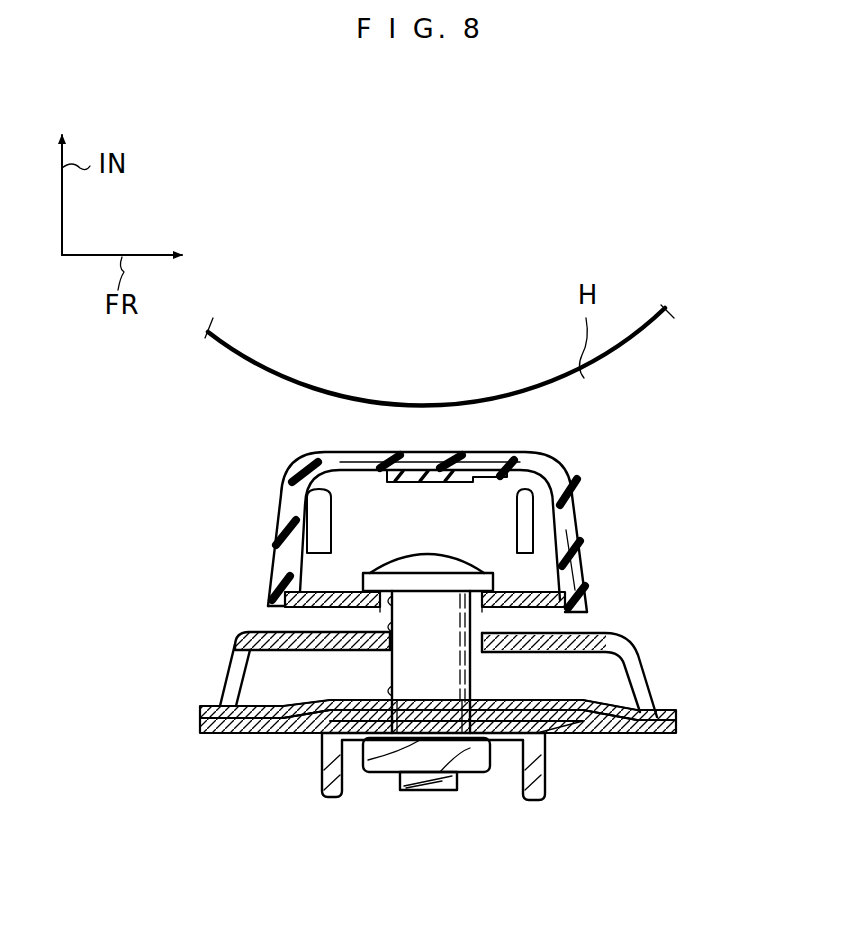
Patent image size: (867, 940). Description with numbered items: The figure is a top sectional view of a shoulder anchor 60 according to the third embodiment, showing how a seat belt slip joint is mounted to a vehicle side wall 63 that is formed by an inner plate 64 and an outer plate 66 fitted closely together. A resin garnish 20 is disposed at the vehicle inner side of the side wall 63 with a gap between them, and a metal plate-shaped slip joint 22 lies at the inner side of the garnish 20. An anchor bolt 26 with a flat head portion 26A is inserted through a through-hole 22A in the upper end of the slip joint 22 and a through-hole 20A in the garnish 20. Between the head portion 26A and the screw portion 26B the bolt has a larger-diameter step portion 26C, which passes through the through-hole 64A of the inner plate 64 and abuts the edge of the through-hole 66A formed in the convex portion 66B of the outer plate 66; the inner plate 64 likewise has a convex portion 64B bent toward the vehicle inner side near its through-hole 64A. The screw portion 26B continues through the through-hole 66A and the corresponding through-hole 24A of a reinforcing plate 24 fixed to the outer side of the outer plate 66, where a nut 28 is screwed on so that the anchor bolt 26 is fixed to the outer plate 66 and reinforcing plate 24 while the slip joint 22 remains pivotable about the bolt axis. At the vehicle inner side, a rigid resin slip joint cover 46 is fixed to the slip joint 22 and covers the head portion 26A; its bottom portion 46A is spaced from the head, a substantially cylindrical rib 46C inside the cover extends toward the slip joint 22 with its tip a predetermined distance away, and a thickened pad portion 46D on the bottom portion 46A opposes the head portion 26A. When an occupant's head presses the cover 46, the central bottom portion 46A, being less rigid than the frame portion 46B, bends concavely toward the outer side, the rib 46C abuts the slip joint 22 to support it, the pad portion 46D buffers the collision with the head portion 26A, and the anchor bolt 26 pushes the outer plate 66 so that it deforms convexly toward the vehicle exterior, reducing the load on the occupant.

The garnish 20 is at (434, 665).
The through-hole 20A is at (388, 613).
The slip joint 22 is at (545, 618).
The through-hole 22A is at (390, 612).
The reinforcing plate 24 is at (530, 800).
The through-hole 24A is at (382, 773).
The anchor bolt 26 is at (451, 660).
The head portion 26A is at (436, 551).
The screw portion 26B is at (427, 791).
The step portion 26C is at (392, 668).
The nut 28 is at (385, 765).
The slip joint cover 46 is at (515, 440).
The bottom portion 46A is at (542, 456).
The frame portion 46B is at (588, 560).
The rib 46C is at (305, 500).
The pad portion 46D is at (392, 488).
The shoulder anchor 60 is at (687, 332).
The side wall 63 is at (486, 797).
The inner plate 64 is at (456, 742).
The through-hole 64A is at (340, 710).
The convex portion 64B is at (592, 727).
The outer plate 66 is at (456, 805).
The through-hole 66A is at (463, 745).
The convex portion 66B is at (562, 760).